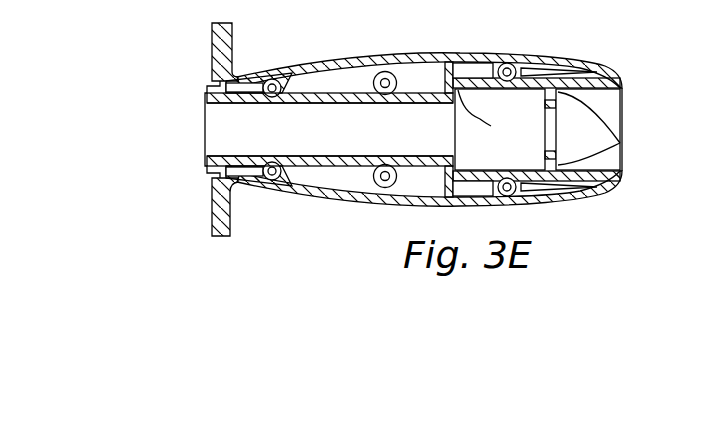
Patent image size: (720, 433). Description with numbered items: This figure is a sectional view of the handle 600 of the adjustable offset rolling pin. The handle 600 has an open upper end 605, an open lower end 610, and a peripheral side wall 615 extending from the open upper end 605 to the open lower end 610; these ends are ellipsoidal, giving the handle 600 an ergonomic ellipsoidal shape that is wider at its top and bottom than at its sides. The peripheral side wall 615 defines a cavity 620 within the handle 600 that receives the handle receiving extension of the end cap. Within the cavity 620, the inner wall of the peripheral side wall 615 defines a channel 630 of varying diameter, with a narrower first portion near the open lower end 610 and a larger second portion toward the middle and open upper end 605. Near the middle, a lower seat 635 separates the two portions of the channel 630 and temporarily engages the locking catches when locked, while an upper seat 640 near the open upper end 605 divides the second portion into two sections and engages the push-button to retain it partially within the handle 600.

The handle 600 is at (545, 47).
The open upper end 605 is at (623, 95).
The open lower end 610 is at (211, 188).
The peripheral side wall 615 is at (341, 203).
The cavity 620 is at (226, 130).
The channel 630 is at (330, 127).
The lower seat 635 is at (491, 126).
The upper seat 640 is at (622, 143).